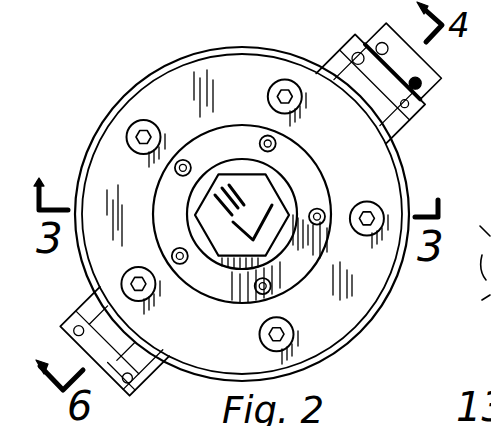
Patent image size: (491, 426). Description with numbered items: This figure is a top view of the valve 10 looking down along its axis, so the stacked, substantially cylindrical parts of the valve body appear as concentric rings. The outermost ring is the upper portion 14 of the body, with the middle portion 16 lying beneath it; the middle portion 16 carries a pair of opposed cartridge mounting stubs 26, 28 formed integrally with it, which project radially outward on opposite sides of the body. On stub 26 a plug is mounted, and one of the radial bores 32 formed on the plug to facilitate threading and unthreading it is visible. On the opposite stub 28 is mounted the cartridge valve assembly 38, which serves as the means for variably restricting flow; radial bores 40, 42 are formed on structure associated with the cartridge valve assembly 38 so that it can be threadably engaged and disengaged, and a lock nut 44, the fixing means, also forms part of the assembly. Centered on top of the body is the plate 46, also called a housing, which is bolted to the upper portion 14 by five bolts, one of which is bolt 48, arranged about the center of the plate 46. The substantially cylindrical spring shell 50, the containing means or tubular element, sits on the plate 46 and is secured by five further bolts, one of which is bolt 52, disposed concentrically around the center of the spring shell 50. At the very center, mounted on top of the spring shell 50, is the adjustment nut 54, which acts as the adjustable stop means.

The valve 10 is at (144, 64).
The upper portion 14 is at (388, 287).
The middle portion 16 is at (363, 331).
The cartridge mounting stub 26 is at (100, 293).
The cartridge mounting stub 28 is at (345, 80).
The radial bore 32 is at (140, 386).
The cartridge valve assembly 38 is at (368, 30).
The radial bore 40 is at (420, 113).
The radial bore 42 is at (428, 88).
The lock nut 44 is at (427, 62).
The plate 46 is at (218, 78).
The bolt 48 is at (386, 214).
The spring shell 50 is at (203, 147).
The bolt 52 is at (328, 210).
The adjustment nut 54 is at (252, 182).